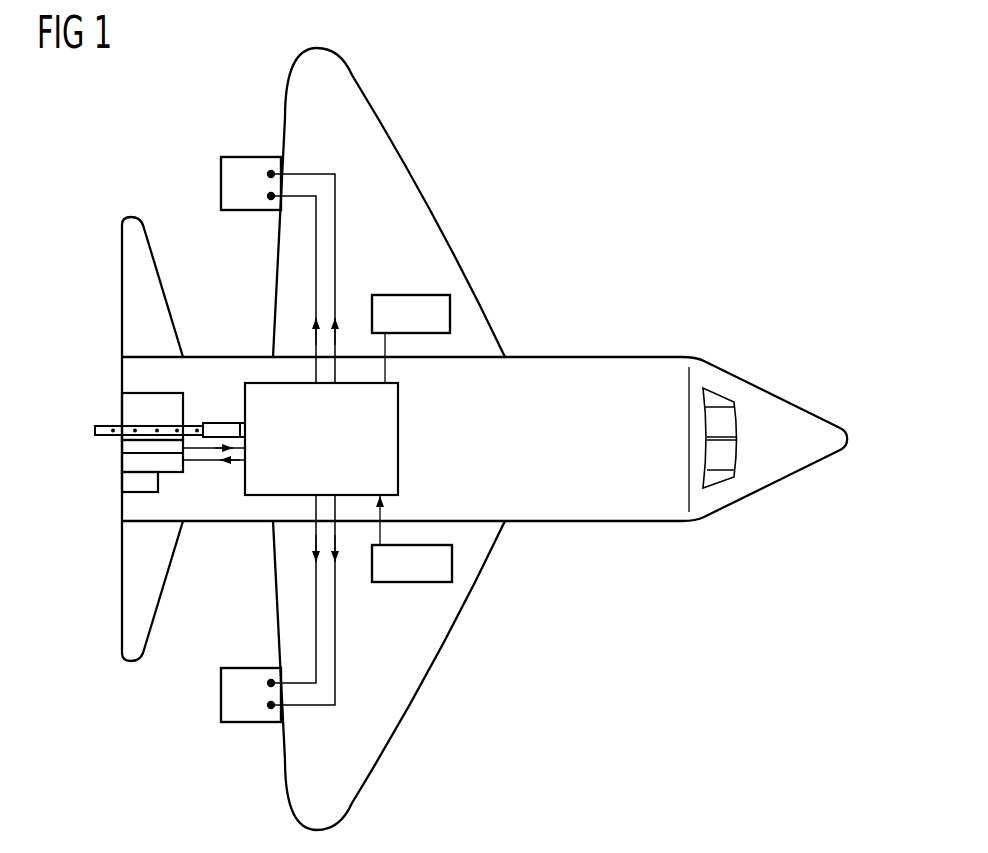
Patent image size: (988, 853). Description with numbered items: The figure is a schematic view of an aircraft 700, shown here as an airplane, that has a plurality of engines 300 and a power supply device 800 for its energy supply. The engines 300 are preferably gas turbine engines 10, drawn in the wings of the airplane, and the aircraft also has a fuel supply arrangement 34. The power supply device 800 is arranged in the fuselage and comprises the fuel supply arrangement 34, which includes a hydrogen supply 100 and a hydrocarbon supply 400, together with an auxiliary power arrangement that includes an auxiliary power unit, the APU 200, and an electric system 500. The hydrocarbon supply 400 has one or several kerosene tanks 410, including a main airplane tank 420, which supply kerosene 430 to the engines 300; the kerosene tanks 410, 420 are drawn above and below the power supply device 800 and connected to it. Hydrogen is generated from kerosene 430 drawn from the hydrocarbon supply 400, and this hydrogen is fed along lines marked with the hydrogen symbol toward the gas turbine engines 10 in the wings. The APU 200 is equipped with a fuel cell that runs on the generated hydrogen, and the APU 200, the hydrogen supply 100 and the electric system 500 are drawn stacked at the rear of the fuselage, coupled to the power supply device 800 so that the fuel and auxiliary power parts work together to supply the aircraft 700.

The gas turbine engine 10 is at (247, 167).
The fuel supply arrangement 34 is at (256, 542).
The hydrogen supply 100 is at (121, 448).
The APU 200 is at (132, 410).
The engines 300 is at (240, 217).
The hydrocarbon supply 400 is at (412, 294).
The kerosene tank 410 is at (430, 329).
The main airplane tank 420 is at (431, 577).
The kerosene 430 is at (337, 220).
The electric system 500 is at (130, 482).
The aircraft 700 is at (638, 315).
The power supply device 800 is at (459, 376).